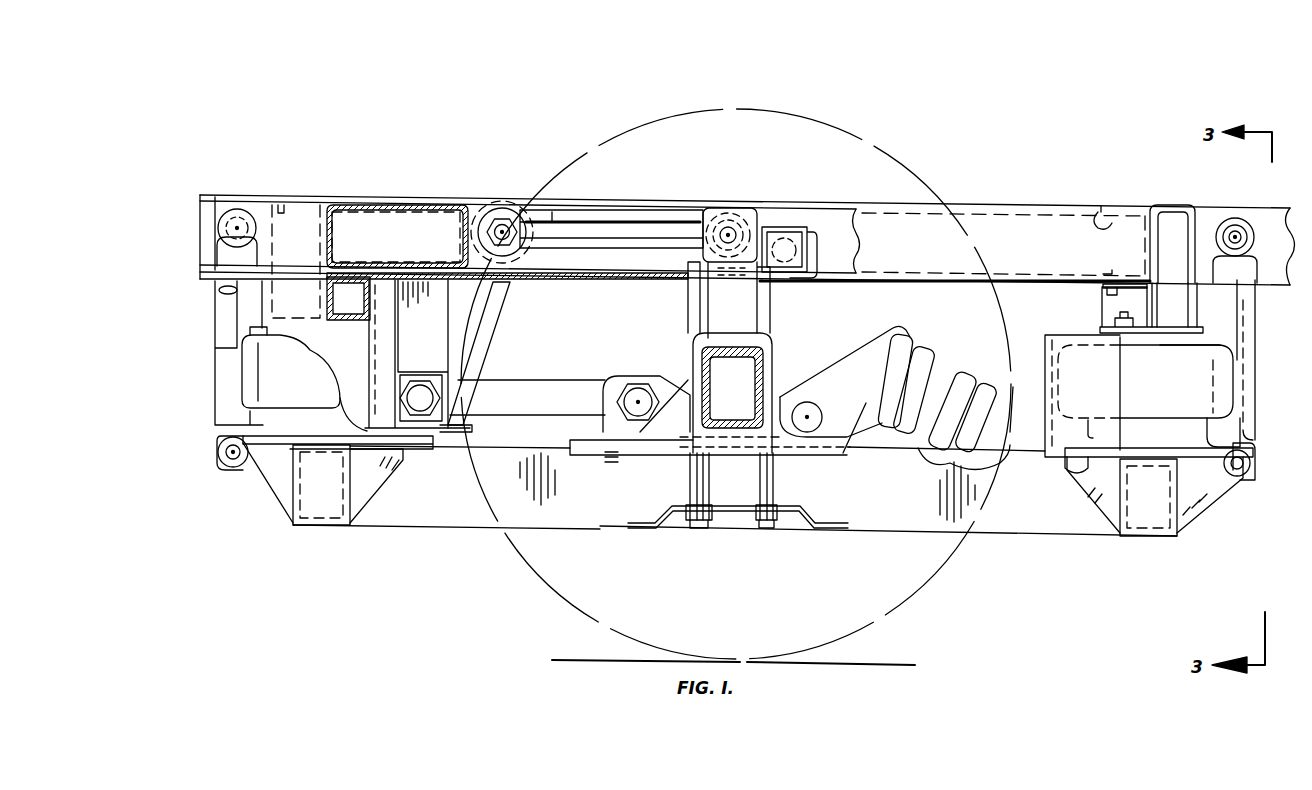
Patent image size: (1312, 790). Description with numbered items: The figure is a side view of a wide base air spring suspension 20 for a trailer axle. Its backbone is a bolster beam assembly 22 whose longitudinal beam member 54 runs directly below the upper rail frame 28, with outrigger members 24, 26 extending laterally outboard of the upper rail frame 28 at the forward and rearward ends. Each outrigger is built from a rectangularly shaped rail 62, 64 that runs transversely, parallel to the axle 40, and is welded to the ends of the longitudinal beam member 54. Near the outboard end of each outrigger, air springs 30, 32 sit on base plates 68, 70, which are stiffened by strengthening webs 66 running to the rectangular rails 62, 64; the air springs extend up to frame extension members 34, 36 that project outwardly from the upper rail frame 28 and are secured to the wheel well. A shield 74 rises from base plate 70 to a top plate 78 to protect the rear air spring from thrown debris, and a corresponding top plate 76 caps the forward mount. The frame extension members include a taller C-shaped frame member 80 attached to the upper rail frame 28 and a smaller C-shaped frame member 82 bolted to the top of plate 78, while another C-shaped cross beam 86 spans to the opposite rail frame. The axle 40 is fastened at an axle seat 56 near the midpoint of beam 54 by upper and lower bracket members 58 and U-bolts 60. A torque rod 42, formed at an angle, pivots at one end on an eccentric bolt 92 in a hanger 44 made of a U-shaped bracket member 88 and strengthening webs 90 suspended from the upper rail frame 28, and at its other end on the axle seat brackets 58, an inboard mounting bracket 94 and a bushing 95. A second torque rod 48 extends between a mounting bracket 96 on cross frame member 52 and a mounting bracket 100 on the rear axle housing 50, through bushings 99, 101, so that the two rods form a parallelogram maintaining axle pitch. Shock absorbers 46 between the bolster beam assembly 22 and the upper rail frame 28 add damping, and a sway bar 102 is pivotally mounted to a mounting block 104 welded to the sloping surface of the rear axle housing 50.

The wide base air spring suspension 20 is at (970, 190).
The bolster beam assembly 22 is at (1066, 548).
The outrigger member 24 is at (317, 512).
The outrigger member 26 is at (1152, 528).
The upper rail frame 28 is at (1020, 197).
The air spring 30 is at (270, 378).
The air spring 32 is at (1235, 395).
The frame extension member 34 is at (288, 285).
The frame extension member 36 is at (1183, 302).
The axle 40 is at (772, 348).
The torque rod 42 is at (548, 380).
The hanger 44 is at (492, 326).
The shock absorber 46 is at (215, 343).
The second torque rod 48 is at (620, 225).
The rear axle housing 50 is at (688, 293).
The cross frame member 52 is at (465, 232).
The longitudinal beam member 54 is at (893, 528).
The axle seat 56 is at (685, 478).
The bracket member 58 is at (810, 508).
The U-bolt 60 is at (702, 348).
The rectangular rail 62 is at (335, 500).
The rectangular rail 64 is at (1128, 530).
The strengthening web 66 is at (272, 483).
The base plate 68 is at (268, 440).
The base plate 70 is at (1085, 455).
The shield 74 is at (1052, 338).
The top plate 76 is at (285, 331).
The top plate 78 is at (1165, 345).
The taller C-shaped frame member 80 is at (1168, 210).
The smaller C-shaped frame member 82 is at (1110, 291).
The C-shaped cross beam 86 is at (1100, 211).
The U-shaped bracket member 88 is at (366, 350).
The strengthening web 90 is at (445, 326).
The eccentric bolt 92 is at (428, 397).
The inboard mounting bracket 94 is at (660, 382).
The bushing 95 is at (628, 393).
The mounting bracket 96 is at (504, 206).
The bushing 99 is at (521, 210).
The mounting bracket 100 is at (745, 212).
The bushing 101 is at (727, 212).
The sway bar 102 is at (795, 228).
The mounting block 104 is at (752, 305).